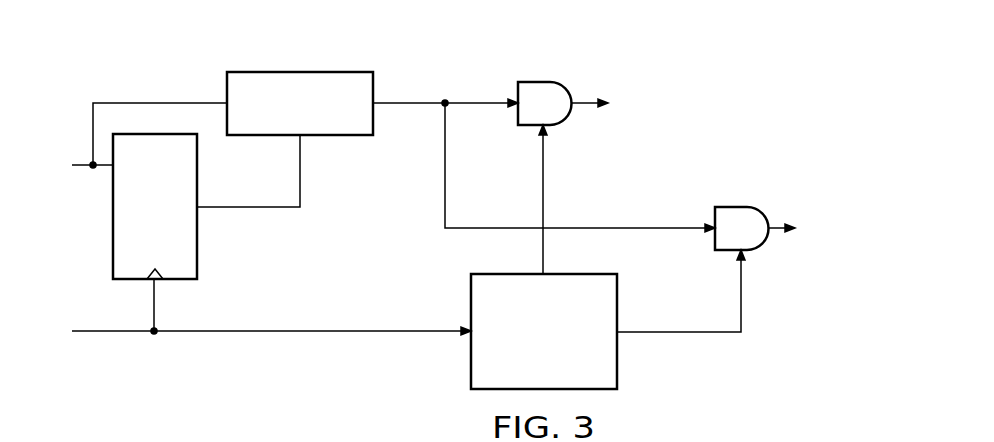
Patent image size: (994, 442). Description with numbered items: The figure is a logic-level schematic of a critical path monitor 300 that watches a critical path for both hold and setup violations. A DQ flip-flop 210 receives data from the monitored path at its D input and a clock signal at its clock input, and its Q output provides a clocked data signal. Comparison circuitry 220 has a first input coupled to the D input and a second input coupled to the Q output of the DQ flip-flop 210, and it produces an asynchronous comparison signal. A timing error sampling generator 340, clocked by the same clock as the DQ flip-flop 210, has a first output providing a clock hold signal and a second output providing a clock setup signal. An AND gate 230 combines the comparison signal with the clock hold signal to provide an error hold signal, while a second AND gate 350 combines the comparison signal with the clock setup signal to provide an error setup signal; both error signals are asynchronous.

The critical path monitor 300 is at (160, 59).
The DQ flip-flop 210 is at (113, 217).
The comparison circuitry 220 is at (288, 72).
The AND gate 230 is at (550, 82).
The AND gate 350 is at (747, 207).
The timing error sampling generator 340 is at (617, 347).